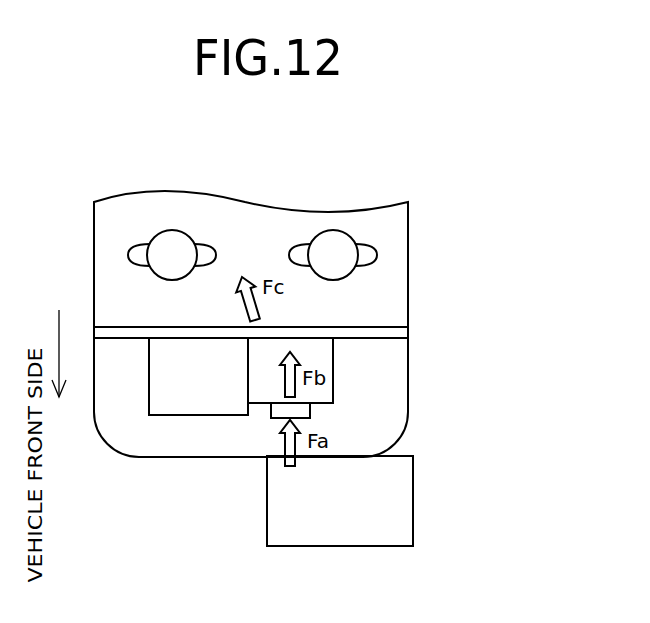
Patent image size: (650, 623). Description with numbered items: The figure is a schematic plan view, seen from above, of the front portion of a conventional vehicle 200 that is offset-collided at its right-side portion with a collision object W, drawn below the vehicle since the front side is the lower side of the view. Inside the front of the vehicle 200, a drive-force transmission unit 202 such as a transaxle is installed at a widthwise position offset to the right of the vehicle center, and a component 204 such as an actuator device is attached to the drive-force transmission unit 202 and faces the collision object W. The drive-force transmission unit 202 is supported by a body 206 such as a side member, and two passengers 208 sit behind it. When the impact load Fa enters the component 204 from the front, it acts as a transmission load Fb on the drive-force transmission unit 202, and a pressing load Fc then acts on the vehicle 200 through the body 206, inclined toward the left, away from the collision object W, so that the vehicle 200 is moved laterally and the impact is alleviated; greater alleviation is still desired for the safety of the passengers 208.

The vehicle 200 is at (437, 200).
The drive-force transmission unit 202 is at (315, 357).
The component 204 is at (298, 409).
The body 206 is at (353, 333).
The passengers 208 is at (170, 247).
The collision object W is at (340, 528).